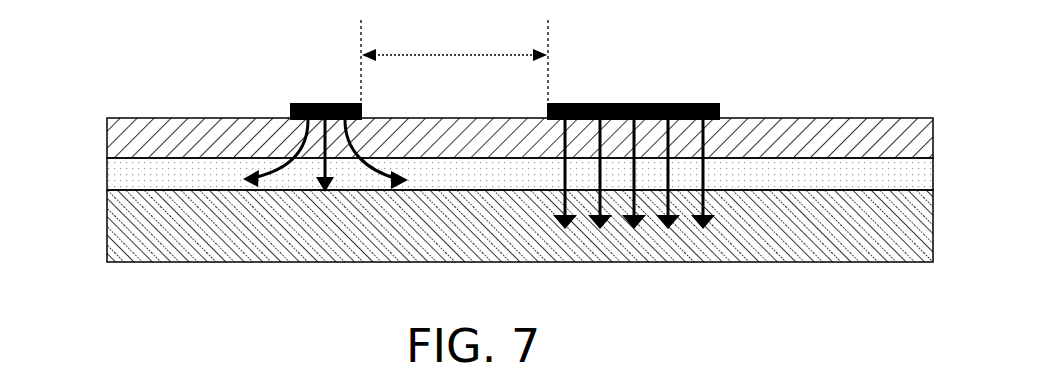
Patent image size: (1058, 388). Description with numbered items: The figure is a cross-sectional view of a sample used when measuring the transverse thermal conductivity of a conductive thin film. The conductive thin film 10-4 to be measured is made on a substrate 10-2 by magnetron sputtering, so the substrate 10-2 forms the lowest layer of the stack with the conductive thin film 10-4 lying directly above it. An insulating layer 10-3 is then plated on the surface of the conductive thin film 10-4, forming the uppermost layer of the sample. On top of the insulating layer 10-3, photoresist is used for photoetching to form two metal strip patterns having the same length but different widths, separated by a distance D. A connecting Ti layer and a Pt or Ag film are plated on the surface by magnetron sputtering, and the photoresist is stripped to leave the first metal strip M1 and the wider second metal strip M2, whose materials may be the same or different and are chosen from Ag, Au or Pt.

The insulating layer 10-3 is at (135, 143).
The conductive thin film 10-4 is at (135, 175).
The substrate 10-2 is at (135, 228).
The first metal strip M1 is at (318, 103).
The second metal strip M2 is at (633, 103).
The distance between the two metal strip patterns D is at (454, 61).